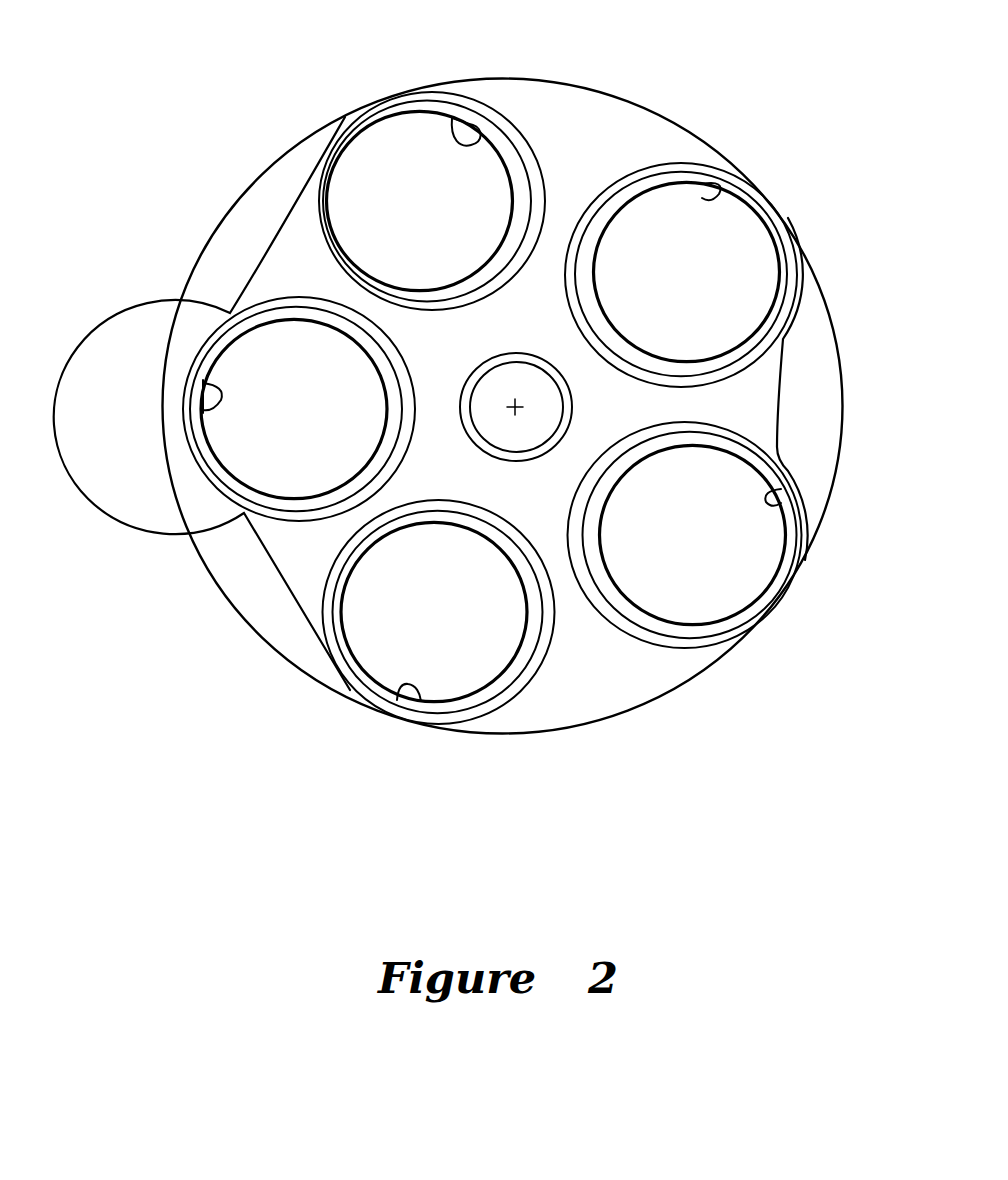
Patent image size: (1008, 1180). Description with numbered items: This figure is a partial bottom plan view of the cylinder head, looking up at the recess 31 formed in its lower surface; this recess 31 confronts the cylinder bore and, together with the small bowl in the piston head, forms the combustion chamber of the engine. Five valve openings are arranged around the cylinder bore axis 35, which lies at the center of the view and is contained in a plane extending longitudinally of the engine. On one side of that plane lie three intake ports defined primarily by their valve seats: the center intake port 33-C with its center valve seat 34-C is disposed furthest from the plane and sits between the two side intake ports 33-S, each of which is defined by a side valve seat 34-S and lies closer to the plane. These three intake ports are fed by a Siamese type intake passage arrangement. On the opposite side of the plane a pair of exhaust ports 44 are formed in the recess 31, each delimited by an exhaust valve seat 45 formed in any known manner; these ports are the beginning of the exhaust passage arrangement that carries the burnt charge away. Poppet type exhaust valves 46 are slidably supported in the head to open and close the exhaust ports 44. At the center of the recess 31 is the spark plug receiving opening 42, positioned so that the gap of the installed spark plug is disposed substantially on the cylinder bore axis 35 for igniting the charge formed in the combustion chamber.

The recess 31 is at (605, 152).
The side intake port 33-S is at (353, 167).
The center intake port 33-C is at (288, 470).
The side intake valve seat 34-S is at (452, 120).
The center intake valve seat 34-C is at (203, 383).
The cylinder bore axis 35 is at (522, 400).
The spark plug receiving opening 42 is at (490, 430).
The exhaust port 44 is at (748, 256).
The exhaust valve seat 45 is at (781, 489).
The exhaust valve 46 is at (703, 188).